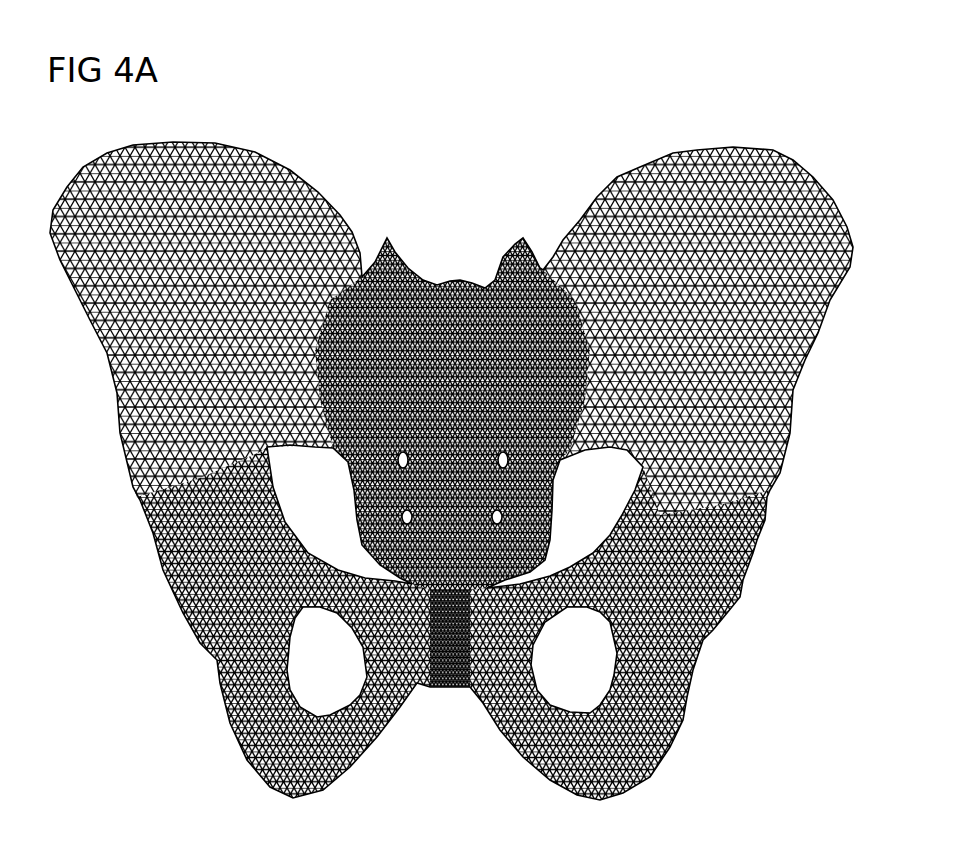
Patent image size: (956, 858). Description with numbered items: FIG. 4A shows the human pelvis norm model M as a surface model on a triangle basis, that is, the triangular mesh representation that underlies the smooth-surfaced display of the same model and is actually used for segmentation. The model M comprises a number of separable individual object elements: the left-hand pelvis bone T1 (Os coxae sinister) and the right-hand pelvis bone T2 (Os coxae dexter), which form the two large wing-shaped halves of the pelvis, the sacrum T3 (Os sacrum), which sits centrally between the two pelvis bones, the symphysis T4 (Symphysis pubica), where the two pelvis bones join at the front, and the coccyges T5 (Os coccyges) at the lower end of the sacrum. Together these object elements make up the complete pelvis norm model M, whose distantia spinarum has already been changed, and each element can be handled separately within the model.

The left-hand pelvis bone T1 is at (723, 143).
The right-hand pelvis bone T2 is at (200, 138).
The sacrum T3 is at (400, 253).
The symphysis T4 is at (453, 690).
The coccyges T5 is at (493, 587).
The norm model M is at (803, 131).